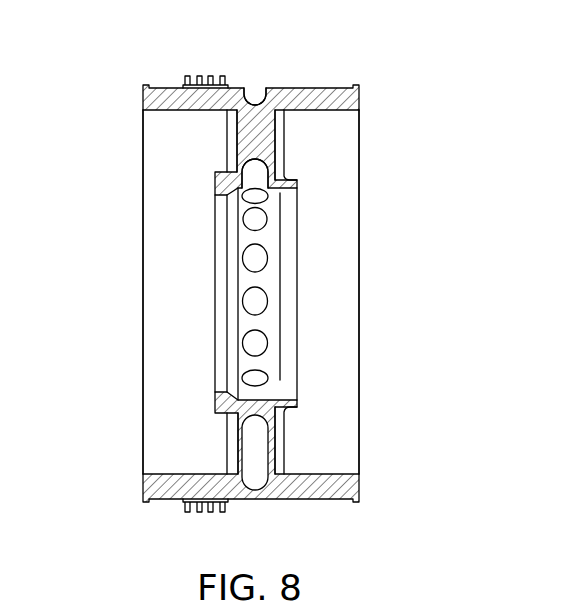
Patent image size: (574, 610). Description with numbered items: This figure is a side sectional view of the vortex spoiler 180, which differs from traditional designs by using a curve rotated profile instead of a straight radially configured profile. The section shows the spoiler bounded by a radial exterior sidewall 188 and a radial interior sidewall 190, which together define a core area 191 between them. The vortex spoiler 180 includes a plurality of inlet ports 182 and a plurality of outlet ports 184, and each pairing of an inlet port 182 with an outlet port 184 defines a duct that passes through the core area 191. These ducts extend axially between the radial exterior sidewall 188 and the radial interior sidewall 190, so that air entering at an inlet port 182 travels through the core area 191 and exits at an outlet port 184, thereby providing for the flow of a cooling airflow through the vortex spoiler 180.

The vortex spoiler 180 is at (422, 541).
The inlet port 182 is at (254, 99).
The outlet port 184 is at (262, 378).
The radial exterior sidewall 188 is at (143, 97).
The radial interior sidewall 190 is at (215, 259).
The core area 191 is at (243, 137).